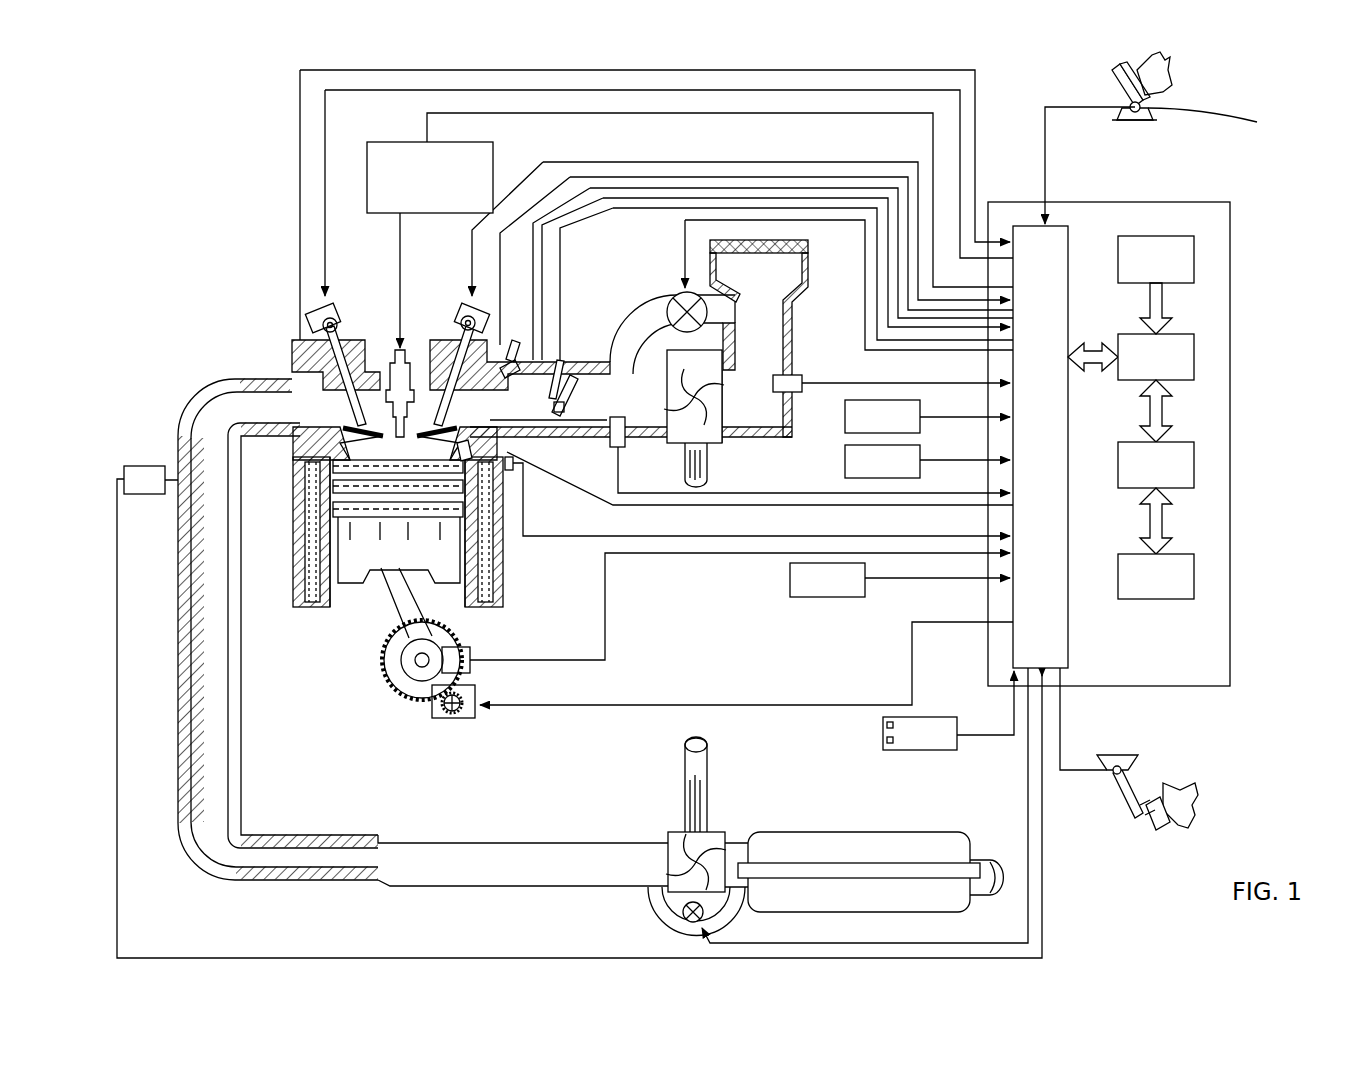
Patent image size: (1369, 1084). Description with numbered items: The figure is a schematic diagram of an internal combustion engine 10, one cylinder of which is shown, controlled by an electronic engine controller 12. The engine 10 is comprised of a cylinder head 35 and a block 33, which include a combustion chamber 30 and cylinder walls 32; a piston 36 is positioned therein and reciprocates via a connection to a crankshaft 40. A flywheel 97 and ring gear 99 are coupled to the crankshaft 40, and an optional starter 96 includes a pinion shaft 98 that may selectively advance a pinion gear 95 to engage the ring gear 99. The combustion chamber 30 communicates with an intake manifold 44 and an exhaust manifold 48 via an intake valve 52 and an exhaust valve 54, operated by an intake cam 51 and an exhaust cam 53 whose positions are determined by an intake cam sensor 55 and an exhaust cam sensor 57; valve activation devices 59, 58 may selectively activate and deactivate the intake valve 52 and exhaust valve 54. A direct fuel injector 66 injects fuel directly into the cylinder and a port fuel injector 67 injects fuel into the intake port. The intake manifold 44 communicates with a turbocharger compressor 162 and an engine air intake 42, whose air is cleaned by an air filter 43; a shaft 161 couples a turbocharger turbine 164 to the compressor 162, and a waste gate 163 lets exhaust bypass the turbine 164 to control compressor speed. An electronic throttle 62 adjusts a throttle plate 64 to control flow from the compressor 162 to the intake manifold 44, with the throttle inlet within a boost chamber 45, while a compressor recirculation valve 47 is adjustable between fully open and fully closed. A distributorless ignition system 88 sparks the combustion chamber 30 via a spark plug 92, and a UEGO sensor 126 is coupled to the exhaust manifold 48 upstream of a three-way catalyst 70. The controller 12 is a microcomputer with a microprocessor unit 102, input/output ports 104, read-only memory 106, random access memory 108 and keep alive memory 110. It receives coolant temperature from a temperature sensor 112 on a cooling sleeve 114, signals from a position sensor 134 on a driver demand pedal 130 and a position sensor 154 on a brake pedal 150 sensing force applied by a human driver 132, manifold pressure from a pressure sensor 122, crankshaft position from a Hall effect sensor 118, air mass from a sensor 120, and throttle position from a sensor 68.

The internal combustion engine 10 is at (222, 291).
The electronic engine controller 12 is at (1230, 204).
The combustion chamber 30 is at (309, 545).
The cylinder walls 32 is at (337, 592).
The block 33 is at (286, 490).
The cylinder head 35 is at (285, 335).
The piston 36 is at (380, 553).
The crankshaft 40 is at (405, 676).
The engine air intake 42 is at (640, 268).
The air filter 43 is at (777, 257).
The intake manifold 44 is at (548, 404).
The boost chamber 45 is at (631, 412).
The compressor recirculation valve 47 is at (679, 298).
The exhaust manifold 48 is at (423, 632).
The intake cam 51 is at (465, 308).
The intake valve 52 is at (443, 410).
The exhaust cam 53 is at (337, 307).
The exhaust valve 54 is at (290, 374).
The intake cam sensor 55 is at (487, 340).
The exhaust cam sensor 57 is at (312, 325).
The valve activation device 58 is at (355, 308).
The valve activation device 59 is at (462, 330).
The electronic throttle 62 is at (571, 400).
The throttle plate 64 is at (572, 414).
The direct fuel injector 66 is at (522, 477).
The port fuel injector 67 is at (523, 343).
The throttle position sensor 68 is at (567, 360).
The three-way catalyst 70 is at (787, 832).
The distributorless ignition system 88 is at (493, 150).
The spark plug 92 is at (402, 346).
The pinion gear 95 is at (455, 718).
The starter 96 is at (475, 716).
The flywheel 97 is at (389, 661).
The pinion shaft 98 is at (445, 712).
The ring gear 99 is at (410, 684).
The microprocessor unit 102 is at (1194, 362).
The input/output ports 104 is at (1072, 226).
The read-only memory 106 is at (1194, 256).
The random access memory 108 is at (1194, 472).
The keep alive memory 110 is at (1194, 582).
The temperature sensor 112 is at (523, 498).
The cooling sleeve 114 is at (500, 560).
The Hall effect sensor 118 is at (470, 652).
The air mass sensor 120 is at (805, 378).
The pressure sensor 122 is at (611, 447).
The Universal Exhaust Gas Oxygen sensor 126 is at (124, 472).
The driver demand pedal 130 is at (1115, 82).
The human driver 132 is at (1180, 68).
The position sensor 134 is at (1225, 127).
The brake pedal 150 is at (1141, 824).
The position sensor 154 is at (1105, 766).
The shaft 161 is at (684, 462).
The turbocharger compressor 162 is at (708, 430).
The waste gate 163 is at (688, 925).
The turbocharger turbine 164 is at (673, 830).